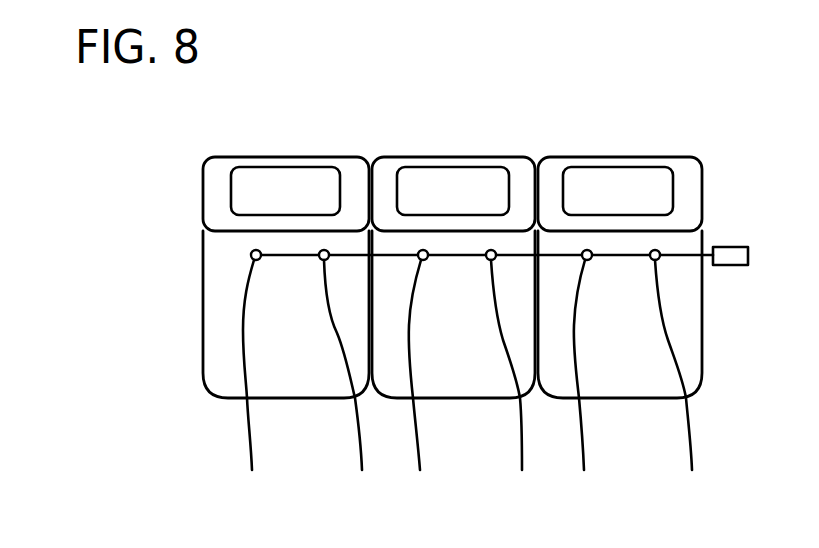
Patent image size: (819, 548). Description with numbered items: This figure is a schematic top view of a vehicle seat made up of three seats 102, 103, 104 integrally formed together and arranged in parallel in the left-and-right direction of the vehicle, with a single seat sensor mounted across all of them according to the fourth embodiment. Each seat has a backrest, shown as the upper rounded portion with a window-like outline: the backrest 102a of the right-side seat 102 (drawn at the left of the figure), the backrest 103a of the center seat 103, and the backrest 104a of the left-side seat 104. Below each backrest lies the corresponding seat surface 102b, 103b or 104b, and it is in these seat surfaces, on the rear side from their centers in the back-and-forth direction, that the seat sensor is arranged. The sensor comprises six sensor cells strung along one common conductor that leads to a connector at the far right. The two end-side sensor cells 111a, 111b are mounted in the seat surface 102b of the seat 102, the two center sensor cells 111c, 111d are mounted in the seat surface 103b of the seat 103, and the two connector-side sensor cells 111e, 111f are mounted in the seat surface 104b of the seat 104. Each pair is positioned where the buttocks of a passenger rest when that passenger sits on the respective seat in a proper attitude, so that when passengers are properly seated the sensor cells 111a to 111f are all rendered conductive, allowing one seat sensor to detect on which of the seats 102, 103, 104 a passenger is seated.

The seat 102 is at (345, 157).
The backrest 102a is at (251, 157).
The seat surface 102b is at (299, 380).
The seat 103 is at (530, 163).
The backrest 103a is at (423, 157).
The seat surface 103b is at (464, 378).
The seat 104 is at (697, 177).
The backrest 104a is at (684, 165).
The seat surface 104b is at (620, 378).
The sensor cell 111a is at (255, 377).
The sensor cell 111b is at (350, 377).
The sensor cell 111c is at (425, 377).
The sensor cell 111d is at (518, 377).
The sensor cell 111e is at (591, 377).
The sensor cell 111f is at (684, 377).